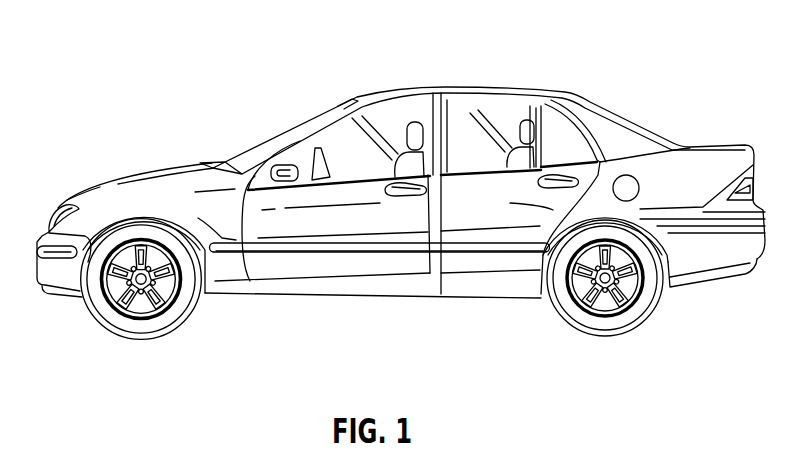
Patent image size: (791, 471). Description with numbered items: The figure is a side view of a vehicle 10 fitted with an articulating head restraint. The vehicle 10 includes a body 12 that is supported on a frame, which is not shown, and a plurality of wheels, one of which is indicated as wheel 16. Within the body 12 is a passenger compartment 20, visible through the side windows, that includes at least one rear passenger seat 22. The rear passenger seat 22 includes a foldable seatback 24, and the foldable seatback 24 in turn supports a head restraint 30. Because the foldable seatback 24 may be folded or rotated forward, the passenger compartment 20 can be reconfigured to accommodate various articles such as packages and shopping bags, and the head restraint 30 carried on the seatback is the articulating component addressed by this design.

The vehicle 10 is at (401, 185).
The body 12 is at (401, 192).
The wheel 16 is at (170, 313).
The passenger compartment 20 is at (340, 147).
The rear passenger seat 22 is at (512, 152).
The foldable seatback 24 is at (543, 161).
The head restraint 30 is at (528, 130).